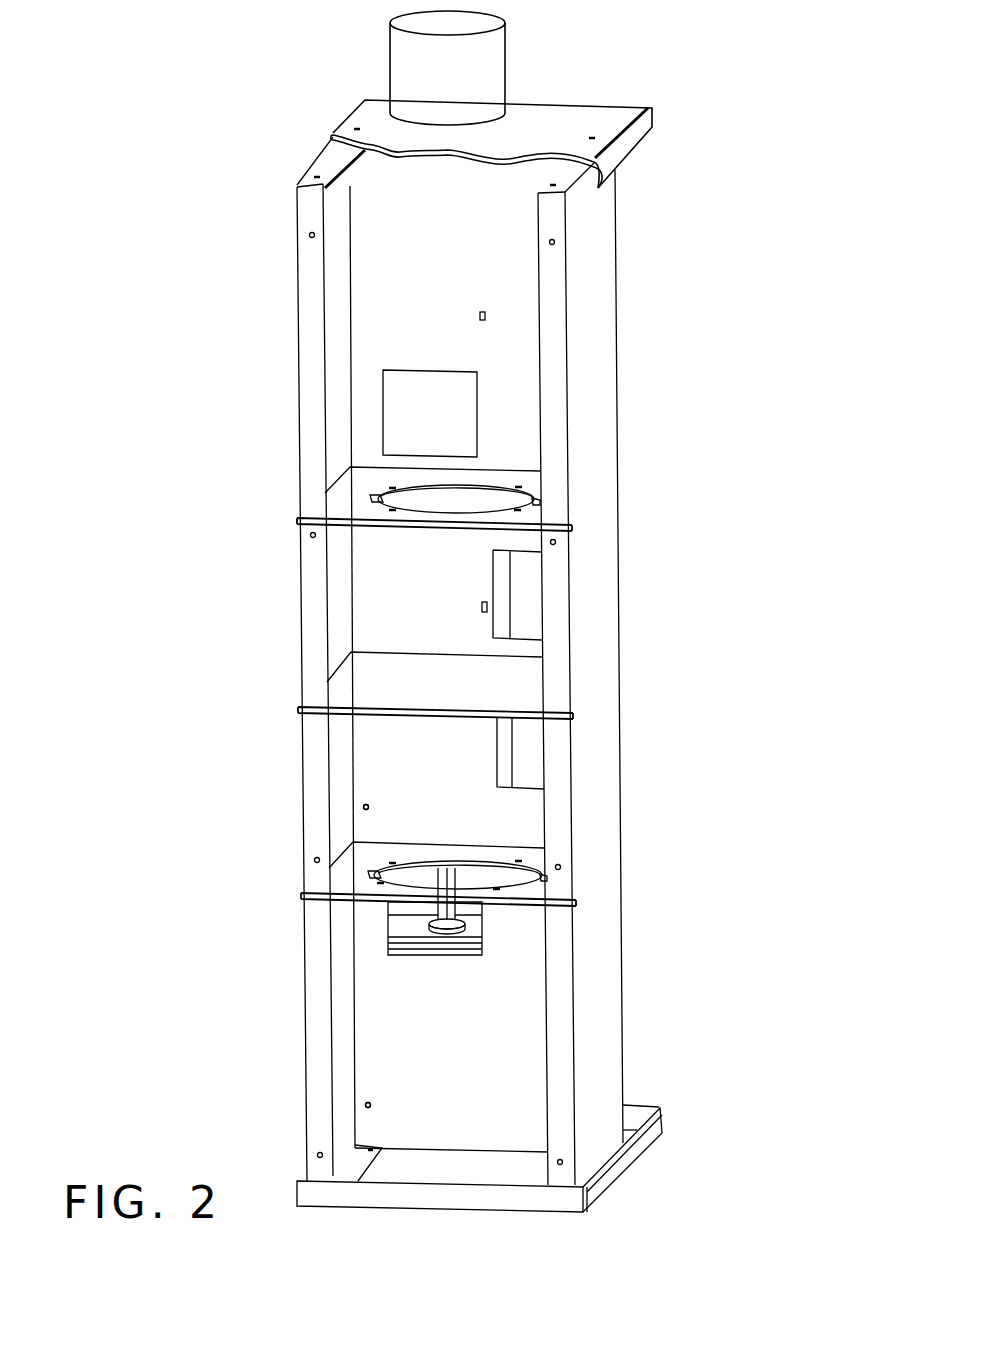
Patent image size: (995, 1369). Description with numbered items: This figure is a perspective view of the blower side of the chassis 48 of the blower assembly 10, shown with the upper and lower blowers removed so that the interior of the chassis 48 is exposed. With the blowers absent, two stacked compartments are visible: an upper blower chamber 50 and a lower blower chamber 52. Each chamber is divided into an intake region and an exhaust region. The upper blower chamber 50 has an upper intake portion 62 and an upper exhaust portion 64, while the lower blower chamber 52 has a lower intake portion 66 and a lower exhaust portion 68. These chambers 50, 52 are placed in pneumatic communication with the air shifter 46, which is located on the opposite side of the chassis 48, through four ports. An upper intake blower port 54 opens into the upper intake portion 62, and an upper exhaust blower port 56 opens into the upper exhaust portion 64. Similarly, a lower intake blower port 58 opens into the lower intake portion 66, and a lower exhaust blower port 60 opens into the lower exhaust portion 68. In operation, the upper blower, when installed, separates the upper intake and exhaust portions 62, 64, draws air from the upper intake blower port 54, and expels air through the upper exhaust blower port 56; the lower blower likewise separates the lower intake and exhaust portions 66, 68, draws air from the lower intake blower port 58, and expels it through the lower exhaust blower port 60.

The blower assembly 10 is at (772, 132).
The air shifter 46 is at (645, 704).
The chassis 48 is at (608, 335).
The upper blower chamber 50 is at (363, 392).
The lower blower chamber 52 is at (363, 788).
The upper intake blower port 54 is at (523, 602).
The upper exhaust blower port 56 is at (418, 407).
The lower intake blower port 58 is at (527, 757).
The lower exhaust blower port 60 is at (403, 907).
The upper intake portion 62 is at (435, 650).
The upper exhaust portion 64 is at (434, 406).
The lower intake portion 66 is at (438, 835).
The lower exhaust portion 68 is at (421, 956).